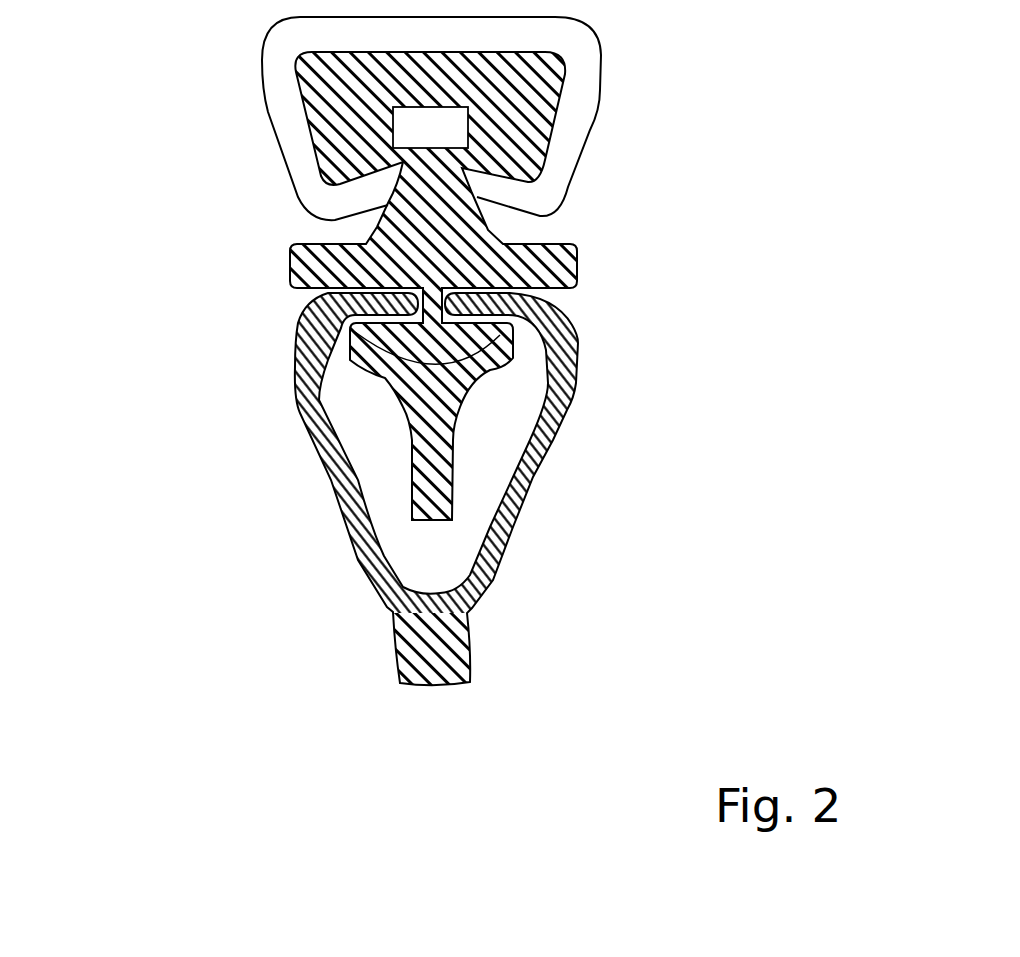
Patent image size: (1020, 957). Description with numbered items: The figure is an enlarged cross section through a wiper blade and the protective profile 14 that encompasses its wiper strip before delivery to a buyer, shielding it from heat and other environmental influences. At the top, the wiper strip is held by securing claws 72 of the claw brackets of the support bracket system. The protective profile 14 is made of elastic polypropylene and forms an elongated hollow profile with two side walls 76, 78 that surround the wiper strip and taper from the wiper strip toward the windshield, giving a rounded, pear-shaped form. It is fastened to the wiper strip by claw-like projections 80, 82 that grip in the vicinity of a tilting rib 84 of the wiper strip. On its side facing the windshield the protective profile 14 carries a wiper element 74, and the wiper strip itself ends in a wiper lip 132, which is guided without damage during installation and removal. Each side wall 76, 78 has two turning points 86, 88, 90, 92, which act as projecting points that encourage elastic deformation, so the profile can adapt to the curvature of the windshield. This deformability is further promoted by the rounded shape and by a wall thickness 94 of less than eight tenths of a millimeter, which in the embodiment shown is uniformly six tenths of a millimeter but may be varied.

The protective profile 14 is at (315, 552).
The securing claws 72 is at (583, 93).
The wiper element 74 is at (437, 663).
The side wall 76 is at (310, 490).
The side wall 78 is at (550, 496).
The claw-like projection 80 is at (455, 308).
The claw-like projection 82 is at (290, 272).
The tilting rib 84 is at (430, 310).
The turning point 86 is at (327, 442).
The turning point 88 is at (535, 442).
The turning point 90 is at (367, 572).
The turning point 92 is at (498, 571).
The wall thickness 94 is at (403, 488).
The wiper lip 132 is at (428, 444).